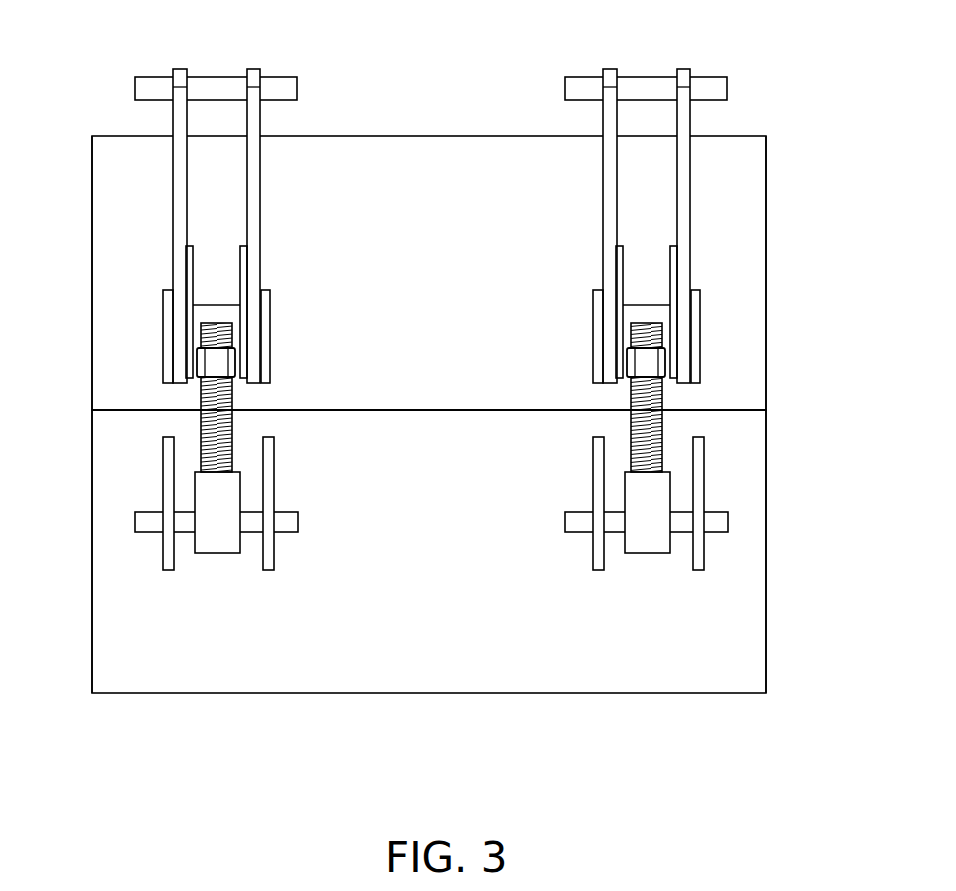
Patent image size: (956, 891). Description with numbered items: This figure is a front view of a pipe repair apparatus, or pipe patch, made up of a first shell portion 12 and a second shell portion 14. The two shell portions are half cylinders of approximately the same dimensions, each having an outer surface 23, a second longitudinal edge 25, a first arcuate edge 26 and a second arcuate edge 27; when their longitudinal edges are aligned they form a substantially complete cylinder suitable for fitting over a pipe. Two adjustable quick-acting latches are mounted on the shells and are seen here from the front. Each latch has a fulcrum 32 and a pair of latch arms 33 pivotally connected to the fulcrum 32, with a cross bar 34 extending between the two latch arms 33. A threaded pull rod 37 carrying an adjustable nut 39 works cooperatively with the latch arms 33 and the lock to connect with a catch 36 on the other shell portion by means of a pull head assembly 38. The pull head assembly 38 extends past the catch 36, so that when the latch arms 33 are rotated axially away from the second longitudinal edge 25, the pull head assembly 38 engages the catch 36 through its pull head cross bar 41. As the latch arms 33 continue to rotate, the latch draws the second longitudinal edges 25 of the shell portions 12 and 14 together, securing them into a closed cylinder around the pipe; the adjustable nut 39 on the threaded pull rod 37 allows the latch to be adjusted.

The first shell portion 12 is at (433, 170).
The second shell portion 14 is at (450, 667).
The outer surface 23 is at (405, 410).
The second longitudinal edge 25 is at (765, 410).
The first arcuate edge 26 is at (92, 302).
The second arcuate edge 27 is at (765, 258).
The fulcrum 32 is at (272, 345).
The latch arm 33 is at (262, 188).
The cross bar 34 is at (210, 76).
The catch 36 is at (277, 453).
The threaded pull rod 37 is at (283, 410).
The pull head assembly 38 is at (215, 553).
The adjustable nut 39 is at (202, 377).
The pull head cross bar 41 is at (300, 520).